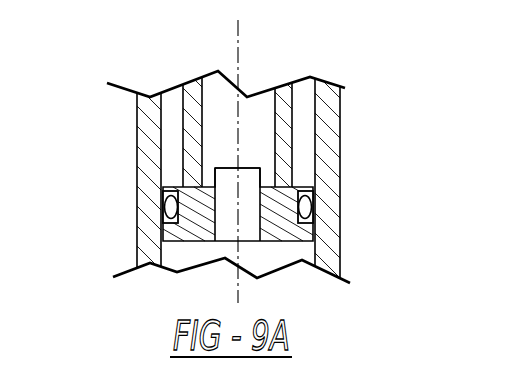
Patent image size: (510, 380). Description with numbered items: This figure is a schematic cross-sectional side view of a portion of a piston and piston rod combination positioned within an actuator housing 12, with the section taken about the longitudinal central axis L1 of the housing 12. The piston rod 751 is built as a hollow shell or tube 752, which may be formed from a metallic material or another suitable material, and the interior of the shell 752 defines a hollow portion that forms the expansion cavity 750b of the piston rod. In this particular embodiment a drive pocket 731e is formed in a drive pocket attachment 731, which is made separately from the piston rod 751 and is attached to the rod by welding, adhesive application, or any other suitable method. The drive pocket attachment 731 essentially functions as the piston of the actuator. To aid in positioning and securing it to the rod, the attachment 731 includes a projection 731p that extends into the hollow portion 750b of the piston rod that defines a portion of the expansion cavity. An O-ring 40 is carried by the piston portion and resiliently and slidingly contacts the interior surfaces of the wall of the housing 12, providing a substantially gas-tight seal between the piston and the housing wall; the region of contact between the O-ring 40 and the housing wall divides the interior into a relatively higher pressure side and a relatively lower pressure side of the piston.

The housing 12 is at (327, 167).
The O-ring 40 is at (308, 208).
The piston rod 751 is at (283, 125).
The hollow shell or tube 752 is at (188, 92).
The expansion cavity 750b is at (228, 128).
The drive pocket attachment 731 is at (204, 222).
The drive pocket 731e is at (245, 222).
The projection 731p is at (210, 173).
The longitudinal central axis L1 is at (238, 55).